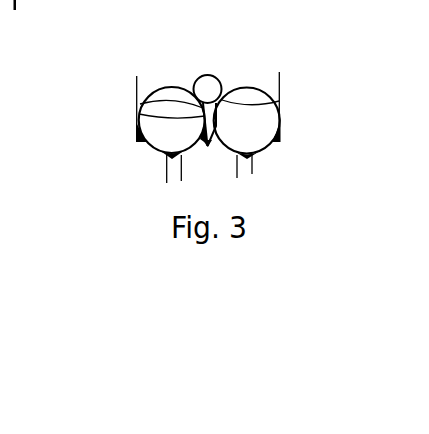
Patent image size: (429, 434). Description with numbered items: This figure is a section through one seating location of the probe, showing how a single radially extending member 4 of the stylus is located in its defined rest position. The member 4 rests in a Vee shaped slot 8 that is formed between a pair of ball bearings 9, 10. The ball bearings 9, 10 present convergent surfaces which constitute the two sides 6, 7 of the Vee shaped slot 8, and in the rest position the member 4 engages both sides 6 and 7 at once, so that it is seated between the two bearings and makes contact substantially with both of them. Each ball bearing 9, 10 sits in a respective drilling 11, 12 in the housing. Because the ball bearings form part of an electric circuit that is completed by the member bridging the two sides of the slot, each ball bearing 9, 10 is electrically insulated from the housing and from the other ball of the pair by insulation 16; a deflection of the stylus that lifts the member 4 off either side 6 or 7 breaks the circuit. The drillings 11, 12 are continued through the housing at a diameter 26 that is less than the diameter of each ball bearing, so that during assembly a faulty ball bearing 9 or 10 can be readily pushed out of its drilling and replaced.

The member 4 is at (214, 76).
The side of Vee shaped slot 6 is at (140, 104).
The side of Vee shaped slot 7 is at (279, 101).
The Vee shaped slot 8 is at (139, 114).
The ball bearing 9 is at (168, 87).
The ball bearing 10 is at (247, 88).
The drilling 11 is at (159, 153).
The drilling 12 is at (280, 143).
The insulation 16 is at (137, 139).
The diameter 26 is at (163, 177).